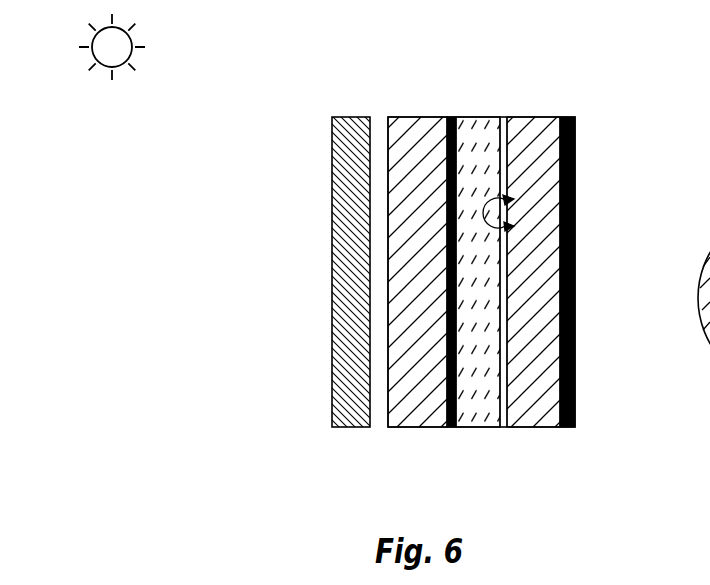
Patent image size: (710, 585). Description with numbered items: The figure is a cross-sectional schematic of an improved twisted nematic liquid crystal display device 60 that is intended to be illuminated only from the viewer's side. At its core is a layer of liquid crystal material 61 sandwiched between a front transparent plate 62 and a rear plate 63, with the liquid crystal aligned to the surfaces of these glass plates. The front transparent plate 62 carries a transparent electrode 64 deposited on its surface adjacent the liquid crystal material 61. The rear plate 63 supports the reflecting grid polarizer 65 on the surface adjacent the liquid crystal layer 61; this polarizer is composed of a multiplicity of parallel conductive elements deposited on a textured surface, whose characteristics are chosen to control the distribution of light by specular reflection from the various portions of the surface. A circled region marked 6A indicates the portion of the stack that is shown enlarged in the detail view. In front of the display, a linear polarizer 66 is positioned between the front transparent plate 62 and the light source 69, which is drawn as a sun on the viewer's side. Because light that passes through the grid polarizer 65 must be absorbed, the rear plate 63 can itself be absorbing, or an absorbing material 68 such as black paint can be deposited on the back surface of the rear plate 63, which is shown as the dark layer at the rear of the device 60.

The twisted nematic liquid crystal display device 60 is at (305, 73).
The layer of liquid crystal material 61 is at (487, 117).
The front transparent plate 62 is at (420, 117).
The rear plate 63 is at (540, 117).
The transparent electrode 64 is at (452, 427).
The reflecting grid polarizer 65 is at (503, 427).
The linear polarizer 66 is at (351, 427).
The absorbing material 68 is at (575, 364).
The light source 69 is at (102, 68).
The enlarged view 6A is at (518, 213).